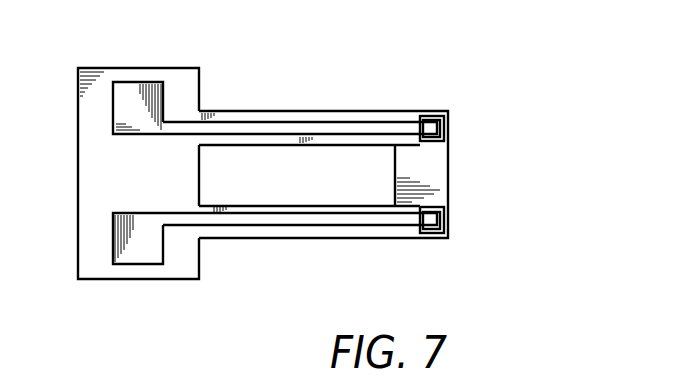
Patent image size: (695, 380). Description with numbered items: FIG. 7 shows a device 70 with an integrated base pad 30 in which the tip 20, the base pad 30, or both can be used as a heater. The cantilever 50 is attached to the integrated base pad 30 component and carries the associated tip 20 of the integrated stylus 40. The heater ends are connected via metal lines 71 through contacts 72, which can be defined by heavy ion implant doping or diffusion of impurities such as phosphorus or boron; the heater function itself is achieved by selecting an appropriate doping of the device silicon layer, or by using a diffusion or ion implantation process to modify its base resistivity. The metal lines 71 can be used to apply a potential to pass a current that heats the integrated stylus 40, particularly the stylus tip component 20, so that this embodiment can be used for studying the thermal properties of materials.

The device 70 is at (399, 56).
The cantilever 50 is at (148, 286).
The metal lines 71 is at (128, 108).
The tip 20 is at (432, 173).
The integrated base pad 30 is at (458, 197).
The contacts 72 is at (445, 127).
The integrated stylus 40 is at (437, 250).